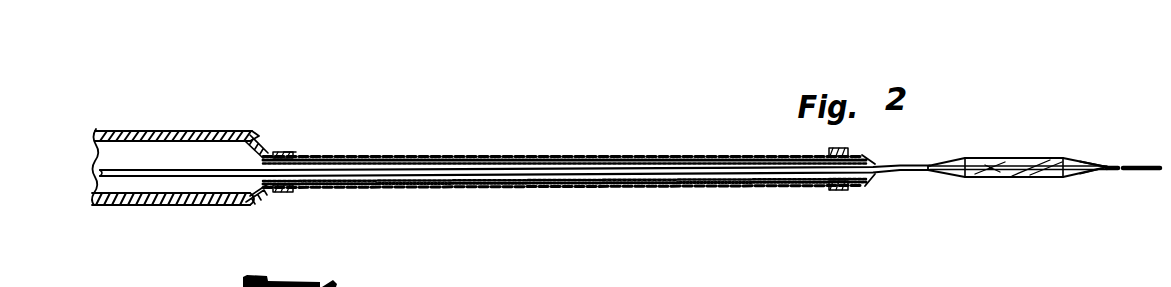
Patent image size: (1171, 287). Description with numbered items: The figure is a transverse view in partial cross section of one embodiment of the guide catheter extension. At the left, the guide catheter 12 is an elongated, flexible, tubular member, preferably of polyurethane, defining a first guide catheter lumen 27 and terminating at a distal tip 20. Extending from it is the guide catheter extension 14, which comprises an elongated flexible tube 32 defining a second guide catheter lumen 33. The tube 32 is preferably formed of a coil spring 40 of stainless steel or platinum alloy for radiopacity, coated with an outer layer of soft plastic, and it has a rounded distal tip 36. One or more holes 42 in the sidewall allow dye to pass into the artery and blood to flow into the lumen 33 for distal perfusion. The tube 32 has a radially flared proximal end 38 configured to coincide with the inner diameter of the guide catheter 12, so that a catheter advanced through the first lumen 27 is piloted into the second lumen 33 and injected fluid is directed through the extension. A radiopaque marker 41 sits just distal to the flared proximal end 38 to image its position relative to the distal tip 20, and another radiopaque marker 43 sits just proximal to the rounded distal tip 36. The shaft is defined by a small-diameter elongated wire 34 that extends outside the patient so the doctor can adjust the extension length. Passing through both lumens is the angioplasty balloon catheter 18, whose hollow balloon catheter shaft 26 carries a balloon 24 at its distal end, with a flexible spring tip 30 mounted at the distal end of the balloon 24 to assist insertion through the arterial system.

The guide catheter 12 is at (145, 132).
The guide catheter extension 14 is at (480, 156).
The angioplasty balloon catheter 18 is at (1049, 154).
The distal tip of the guide catheter 20 is at (260, 138).
The balloon 24 is at (1077, 162).
The hollow balloon catheter shaft 26 is at (114, 170).
The first guide catheter lumen 27 is at (203, 152).
The flexible spring tip 30 is at (1128, 170).
The elongated flexible tube 32 is at (534, 158).
The second guide catheter lumen 33 is at (601, 161).
The elongated wire 34 is at (148, 193).
The rounded distal tip 36 is at (862, 185).
The flared proximal end 38 is at (274, 192).
The coil spring 40 is at (410, 157).
The radiopaque marker 41 is at (297, 152).
The holes 42 is at (328, 151).
The radiopaque marker 43 is at (837, 151).